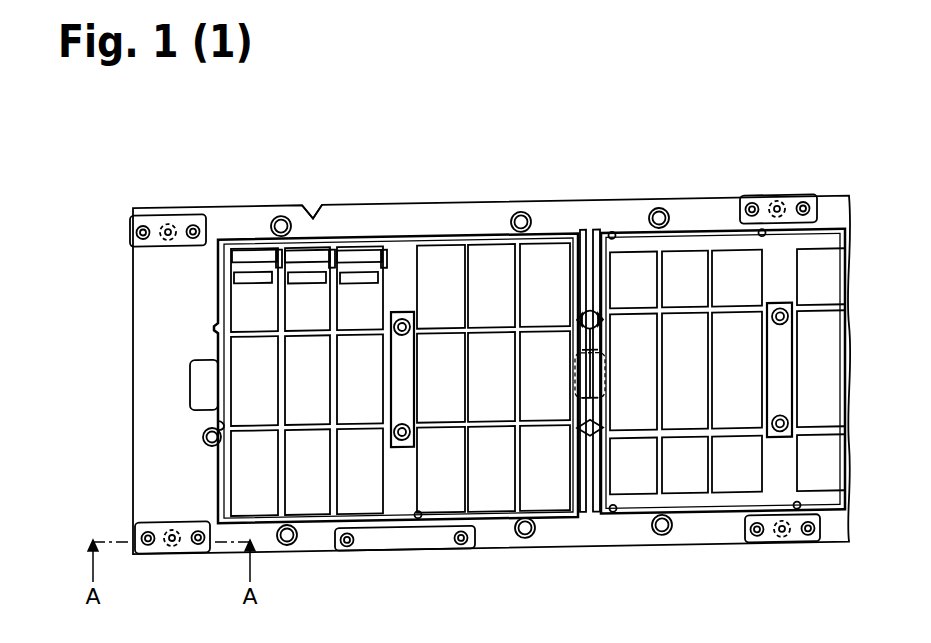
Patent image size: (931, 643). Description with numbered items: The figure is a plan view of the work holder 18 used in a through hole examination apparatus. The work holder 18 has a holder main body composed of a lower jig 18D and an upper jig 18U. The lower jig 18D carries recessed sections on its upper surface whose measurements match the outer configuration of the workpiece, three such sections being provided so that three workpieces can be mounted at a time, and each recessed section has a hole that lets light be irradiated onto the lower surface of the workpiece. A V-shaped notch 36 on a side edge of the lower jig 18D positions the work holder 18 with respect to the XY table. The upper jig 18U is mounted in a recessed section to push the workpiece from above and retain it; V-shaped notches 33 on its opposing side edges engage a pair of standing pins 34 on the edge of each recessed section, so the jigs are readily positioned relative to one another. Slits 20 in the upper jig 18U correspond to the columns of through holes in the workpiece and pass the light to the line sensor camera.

The work holder 18 is at (226, 196).
The lower jig 18D is at (153, 288).
The upper jig 18U is at (402, 502).
The slits 20 is at (358, 275).
The V-shaped notches 33 is at (217, 428).
The standing pins 34 is at (201, 440).
The V-shaped notch 36 is at (312, 197).